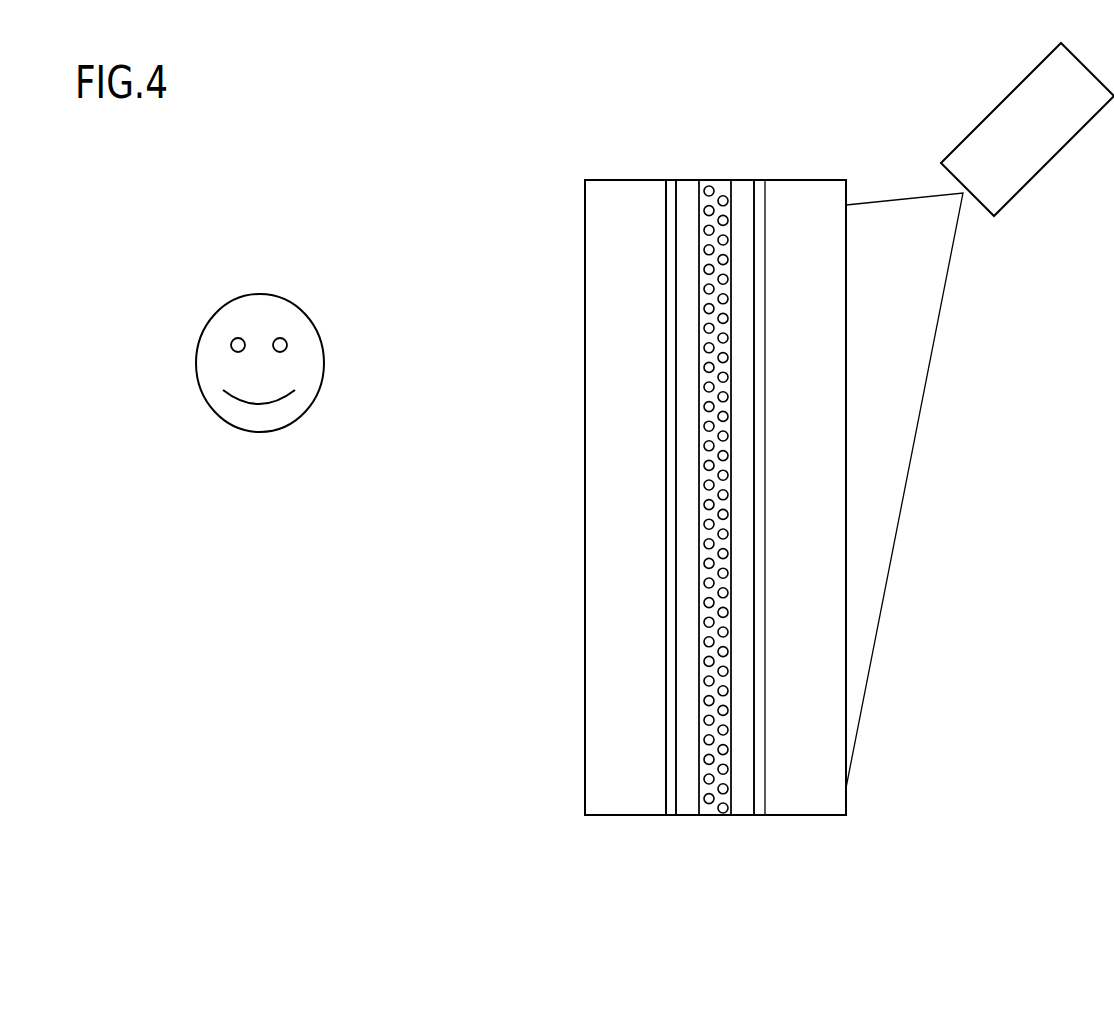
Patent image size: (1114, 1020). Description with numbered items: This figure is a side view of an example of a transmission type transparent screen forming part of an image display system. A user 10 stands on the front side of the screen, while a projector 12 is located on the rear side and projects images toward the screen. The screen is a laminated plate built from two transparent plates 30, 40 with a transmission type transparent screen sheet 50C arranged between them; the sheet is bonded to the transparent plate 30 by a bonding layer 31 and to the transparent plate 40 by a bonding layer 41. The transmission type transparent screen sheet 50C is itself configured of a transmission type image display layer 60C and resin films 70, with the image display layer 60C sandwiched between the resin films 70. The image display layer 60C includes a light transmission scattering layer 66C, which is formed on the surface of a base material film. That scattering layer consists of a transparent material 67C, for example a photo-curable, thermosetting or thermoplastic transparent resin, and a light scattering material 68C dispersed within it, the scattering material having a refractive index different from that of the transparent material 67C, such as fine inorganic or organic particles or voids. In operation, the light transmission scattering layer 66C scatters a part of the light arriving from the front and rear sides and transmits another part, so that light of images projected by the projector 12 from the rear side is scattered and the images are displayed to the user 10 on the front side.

The user 10 is at (312, 322).
The projector 12 is at (1003, 99).
The transparent plate 30 is at (628, 190).
The bonding layer 31 is at (670, 190).
The transparent plate 40 is at (805, 190).
The bonding layer 41 is at (762, 190).
The transmission type transparent screen sheet 50C is at (715, 540).
The transmission type image display layer 60C is at (762, 912).
The light transmission scattering layer 66C is at (717, 546).
The transparent material 67C is at (708, 806).
The light scattering material 68C is at (724, 806).
The resin films 70 is at (815, 914).